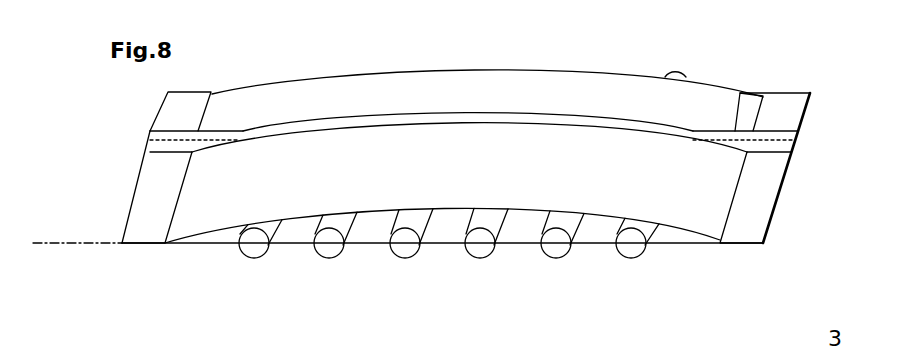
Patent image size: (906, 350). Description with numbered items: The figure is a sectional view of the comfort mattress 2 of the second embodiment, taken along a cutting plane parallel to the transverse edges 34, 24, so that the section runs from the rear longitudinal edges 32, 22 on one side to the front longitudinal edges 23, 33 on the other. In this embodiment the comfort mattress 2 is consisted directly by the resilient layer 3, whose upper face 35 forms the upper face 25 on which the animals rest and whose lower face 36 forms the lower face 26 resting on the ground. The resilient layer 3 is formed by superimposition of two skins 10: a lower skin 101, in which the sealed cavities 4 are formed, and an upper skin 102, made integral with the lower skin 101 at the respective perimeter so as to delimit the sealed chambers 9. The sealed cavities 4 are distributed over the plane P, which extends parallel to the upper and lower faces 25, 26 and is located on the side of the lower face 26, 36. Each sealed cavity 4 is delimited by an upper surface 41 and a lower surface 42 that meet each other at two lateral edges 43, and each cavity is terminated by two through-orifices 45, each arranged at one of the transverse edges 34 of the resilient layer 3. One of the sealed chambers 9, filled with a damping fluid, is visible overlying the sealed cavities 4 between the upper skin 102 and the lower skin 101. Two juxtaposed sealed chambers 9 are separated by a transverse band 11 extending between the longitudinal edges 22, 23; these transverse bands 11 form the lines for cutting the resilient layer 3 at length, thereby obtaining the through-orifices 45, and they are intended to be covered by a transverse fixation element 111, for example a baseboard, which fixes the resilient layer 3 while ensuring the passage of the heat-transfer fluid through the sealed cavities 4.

The plane P is at (63, 244).
The skins 10 is at (442, 274).
The lower skin 101 is at (193, 244).
The upper skin 102 is at (706, 240).
The sealed chamber 9 is at (678, 240).
The lower face of the resilient layer 36 is at (291, 280).
The lower face of the comfort mattress 26 is at (302, 270).
The sealed cavity 4 is at (593, 272).
The through-orifice 45 is at (556, 246).
The lower surface 42 is at (405, 271).
The upper surface 41 is at (410, 216).
The lateral edges 43 is at (381, 261).
The transverse fixation element 111 is at (131, 111).
The transverse band 11 is at (174, 130).
The rear longitudinal edge of the resilient layer 32 is at (150, 187).
The rear longitudinal edge of the comfort mattress 22 is at (119, 210).
The comfort mattress 2 is at (747, 84).
The resilient layer 3 is at (722, 100).
The front longitudinal edge of the comfort mattress 23 is at (793, 148).
The front longitudinal edge of the resilient layer 33 is at (815, 117).
The transverse edges of the resilient layer 34 is at (487, 50).
The transverse edges of the comfort mattress 24 is at (613, 58).
The upper face of the resilient layer 35 is at (468, 82).
The upper face of the comfort mattress 25 is at (393, 78).